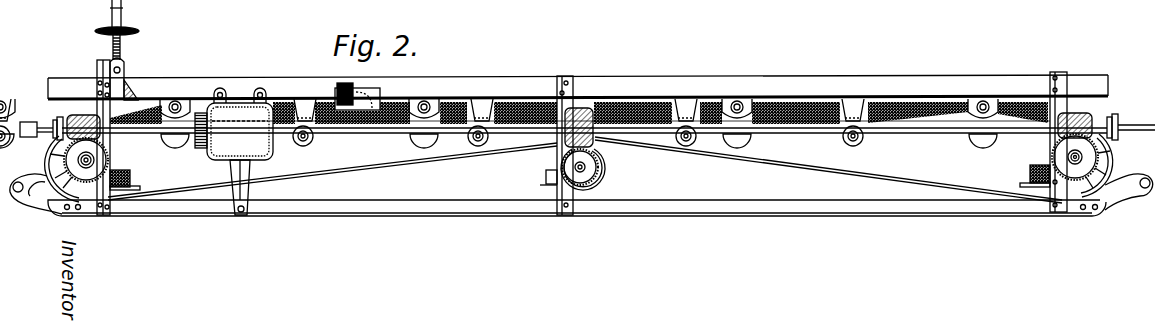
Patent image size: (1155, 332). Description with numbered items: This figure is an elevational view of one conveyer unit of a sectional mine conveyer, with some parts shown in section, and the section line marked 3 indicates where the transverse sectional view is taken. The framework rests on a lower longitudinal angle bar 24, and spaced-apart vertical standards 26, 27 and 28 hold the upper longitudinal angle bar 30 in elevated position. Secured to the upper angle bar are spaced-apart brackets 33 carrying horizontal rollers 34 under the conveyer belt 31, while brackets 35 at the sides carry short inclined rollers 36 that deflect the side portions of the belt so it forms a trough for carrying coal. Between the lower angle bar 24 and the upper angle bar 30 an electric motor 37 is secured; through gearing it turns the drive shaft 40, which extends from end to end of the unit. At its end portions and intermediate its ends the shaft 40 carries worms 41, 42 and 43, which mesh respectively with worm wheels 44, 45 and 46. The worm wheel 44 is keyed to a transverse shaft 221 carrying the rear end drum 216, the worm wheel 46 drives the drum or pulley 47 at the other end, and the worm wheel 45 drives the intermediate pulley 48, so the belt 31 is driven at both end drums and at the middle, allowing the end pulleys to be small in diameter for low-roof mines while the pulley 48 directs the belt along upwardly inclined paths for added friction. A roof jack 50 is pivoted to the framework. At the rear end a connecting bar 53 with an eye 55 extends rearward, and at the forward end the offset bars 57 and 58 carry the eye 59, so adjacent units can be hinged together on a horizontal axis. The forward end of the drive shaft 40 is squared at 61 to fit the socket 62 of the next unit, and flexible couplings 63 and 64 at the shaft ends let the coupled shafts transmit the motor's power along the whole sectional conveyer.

The section line 3- 3 is at (82, 108).
The lower longitudinal angle bar 24 is at (362, 210).
The vertical standard 26 is at (100, 97).
The vertical standard 27 is at (568, 103).
The vertical standard 28 is at (1053, 102).
The upper longitudinal angle bar 30 is at (423, 84).
The conveyer belt 31 is at (640, 97).
The brackets 33 is at (305, 108).
The horizontal rollers 34 is at (304, 146).
The brackets 35 is at (176, 100).
The inclined rollers 36 is at (171, 144).
The electric motor 37 is at (240, 105).
The drive shaft 40 is at (368, 133).
The worm 41 is at (80, 118).
The worm 42 is at (586, 106).
The worm 43 is at (1077, 115).
The worm wheel 44 is at (88, 163).
The worm wheel 45 is at (590, 166).
The worm wheel 46 is at (1103, 156).
The drum or pulley 47 is at (1038, 165).
The pulley 48 is at (600, 188).
The roof jack 50 is at (124, 29).
The connecting bar 53 is at (32, 193).
The eye 55 is at (18, 181).
The offset bar 57 is at (1123, 193).
The offset bar 58 is at (201, 113).
The eye 59 is at (1145, 178).
The squared end 61 is at (1152, 126).
The socket 62 is at (28, 124).
The flexible coupling 63 is at (58, 121).
The flexible coupling 64 is at (1110, 118).
The end drum 216 is at (123, 168).
The transverse shaft 221 is at (88, 166).